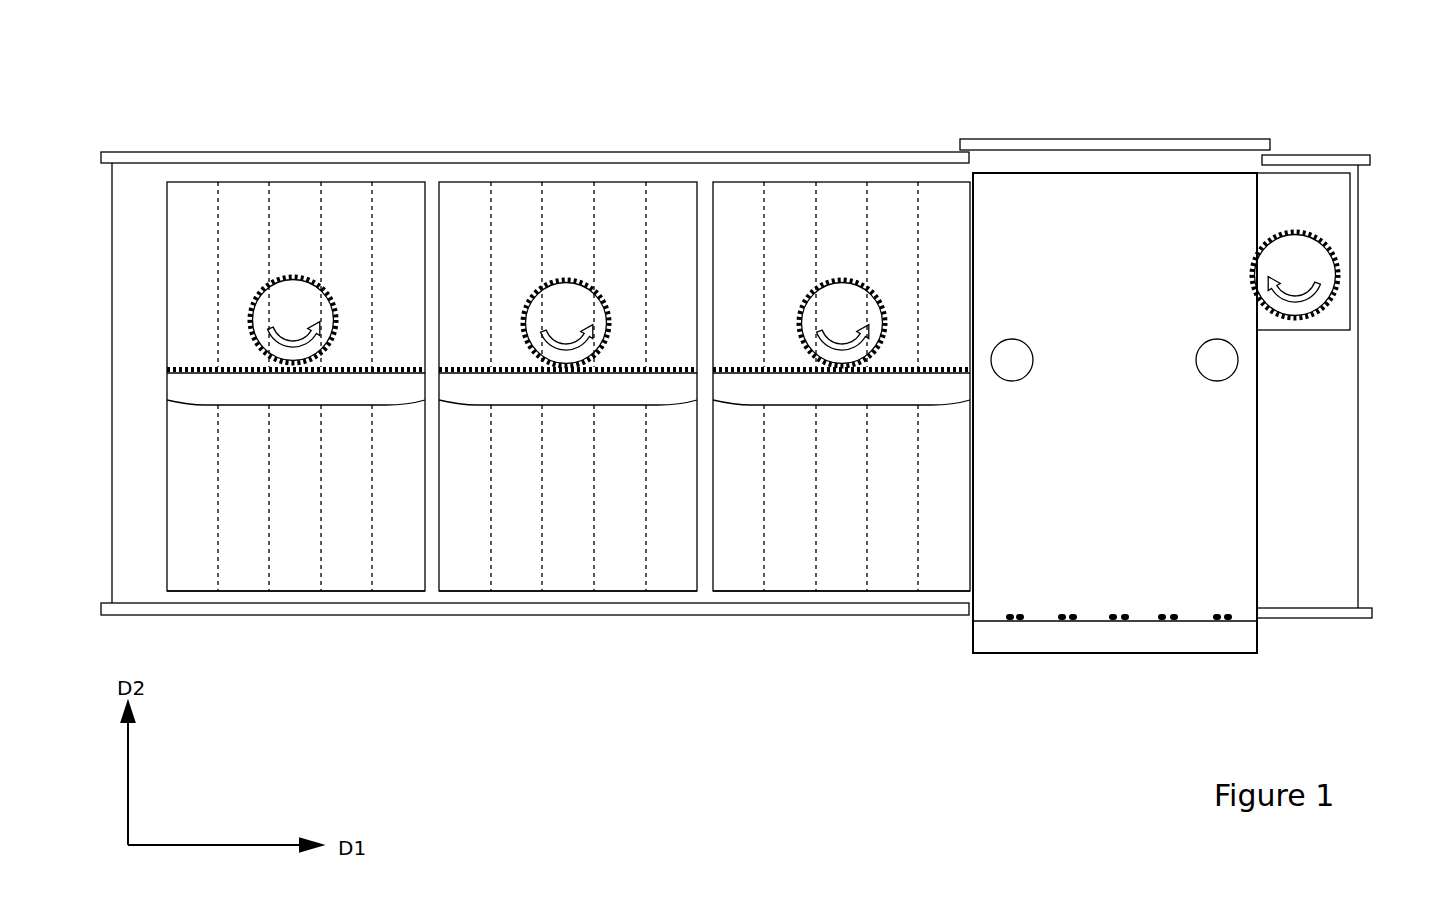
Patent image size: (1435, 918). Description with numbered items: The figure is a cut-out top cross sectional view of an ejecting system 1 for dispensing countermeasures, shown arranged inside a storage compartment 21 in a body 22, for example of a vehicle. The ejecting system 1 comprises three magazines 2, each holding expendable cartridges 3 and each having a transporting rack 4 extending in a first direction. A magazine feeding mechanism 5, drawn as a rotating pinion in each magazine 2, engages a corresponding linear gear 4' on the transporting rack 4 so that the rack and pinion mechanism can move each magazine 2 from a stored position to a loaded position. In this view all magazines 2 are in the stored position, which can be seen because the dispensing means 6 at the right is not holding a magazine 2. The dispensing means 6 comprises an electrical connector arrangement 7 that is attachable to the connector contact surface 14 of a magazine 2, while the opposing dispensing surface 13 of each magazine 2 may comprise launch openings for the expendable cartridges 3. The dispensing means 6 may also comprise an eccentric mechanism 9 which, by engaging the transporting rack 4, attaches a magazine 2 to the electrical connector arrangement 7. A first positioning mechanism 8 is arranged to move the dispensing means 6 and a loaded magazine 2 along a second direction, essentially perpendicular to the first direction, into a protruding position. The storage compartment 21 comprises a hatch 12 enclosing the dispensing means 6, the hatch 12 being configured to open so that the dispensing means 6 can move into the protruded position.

The ejecting system 1 is at (1200, 112).
The magazine 2 is at (580, 605).
The expendable cartridge 3 is at (670, 542).
The transporting rack 4 is at (523, 437).
The linear gear 4' is at (513, 418).
The magazine feeding mechanism 5 is at (256, 338).
The dispensing means 6 is at (1048, 660).
The electrical connector arrangement 7 is at (1175, 617).
The first positioning mechanism 8 is at (1300, 330).
The eccentric mechanism 9 is at (1232, 372).
The hatch 12 is at (1025, 140).
The dispensing surface 13 is at (728, 182).
The connector contact surface 14 is at (738, 592).
The storage compartment 21 is at (147, 194).
The body 22 is at (590, 152).